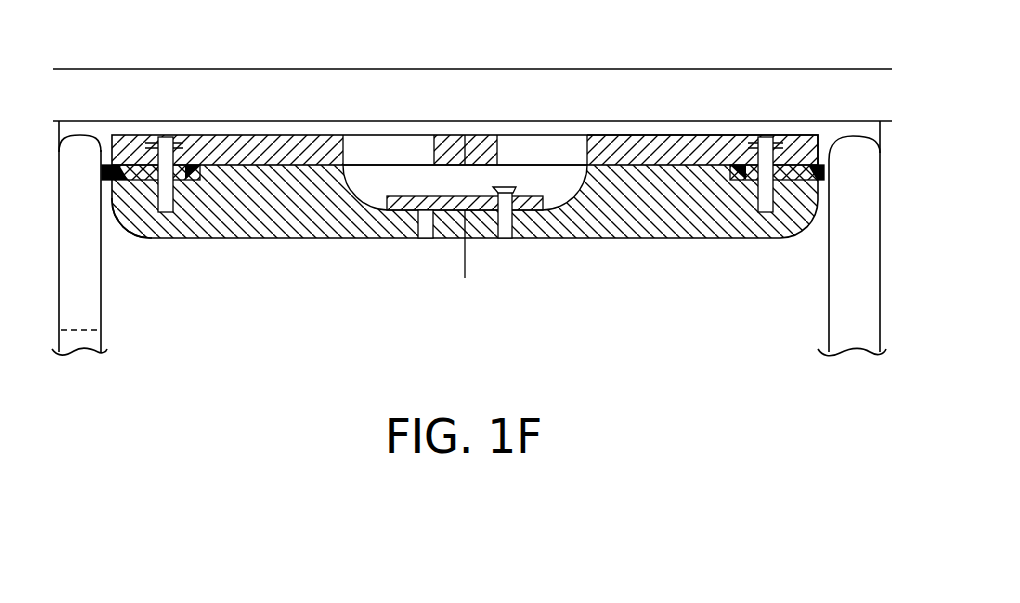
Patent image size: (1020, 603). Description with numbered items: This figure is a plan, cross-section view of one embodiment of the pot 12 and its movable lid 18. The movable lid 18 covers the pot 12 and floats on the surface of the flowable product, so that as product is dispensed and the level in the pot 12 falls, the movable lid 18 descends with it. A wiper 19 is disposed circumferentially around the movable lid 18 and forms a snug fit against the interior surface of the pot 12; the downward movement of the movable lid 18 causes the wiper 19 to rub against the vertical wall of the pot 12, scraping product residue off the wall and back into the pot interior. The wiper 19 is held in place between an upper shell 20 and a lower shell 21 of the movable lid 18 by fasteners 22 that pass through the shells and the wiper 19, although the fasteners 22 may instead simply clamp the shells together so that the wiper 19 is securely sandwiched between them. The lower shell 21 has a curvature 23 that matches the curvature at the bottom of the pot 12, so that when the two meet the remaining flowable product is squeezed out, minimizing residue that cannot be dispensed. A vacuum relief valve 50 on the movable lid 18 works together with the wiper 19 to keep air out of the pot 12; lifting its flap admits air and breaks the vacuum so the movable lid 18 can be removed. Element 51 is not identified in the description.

The pot 12 is at (828, 305).
The movable lid 18 is at (257, 133).
The wiper 19 is at (127, 168).
The upper shell 20 is at (650, 133).
The lower shell 21 is at (630, 207).
The fasteners 22 is at (777, 138).
The curvature 23 is at (128, 240).
The vacuum relief valve 50 is at (398, 194).
The slot 51 is at (425, 238).